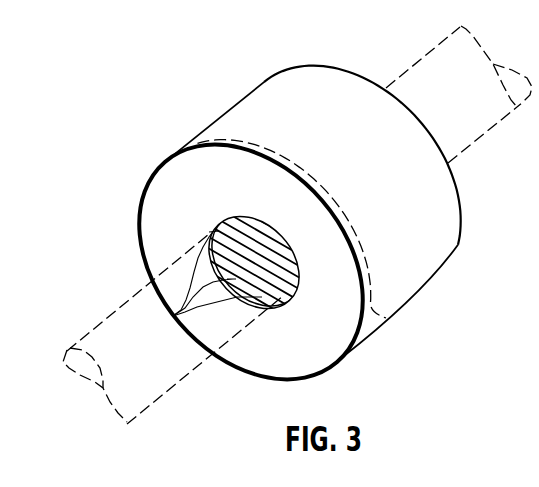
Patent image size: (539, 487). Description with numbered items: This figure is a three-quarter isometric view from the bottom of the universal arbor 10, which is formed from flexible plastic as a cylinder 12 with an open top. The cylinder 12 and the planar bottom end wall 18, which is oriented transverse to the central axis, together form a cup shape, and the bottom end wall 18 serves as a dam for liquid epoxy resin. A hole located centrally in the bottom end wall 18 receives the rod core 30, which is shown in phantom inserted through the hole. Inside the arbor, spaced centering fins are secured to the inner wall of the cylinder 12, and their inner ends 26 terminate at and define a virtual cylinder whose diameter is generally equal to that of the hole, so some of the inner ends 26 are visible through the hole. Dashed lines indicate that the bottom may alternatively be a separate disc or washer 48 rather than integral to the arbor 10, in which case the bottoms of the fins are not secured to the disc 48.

The universal arbor 10 is at (198, 84).
The cylinder 12 is at (367, 162).
The bottom end wall 18 is at (195, 226).
The inner ends of centering fins 26 is at (173, 316).
The rod core 30 is at (422, 54).
The disc or washer 48 is at (398, 327).